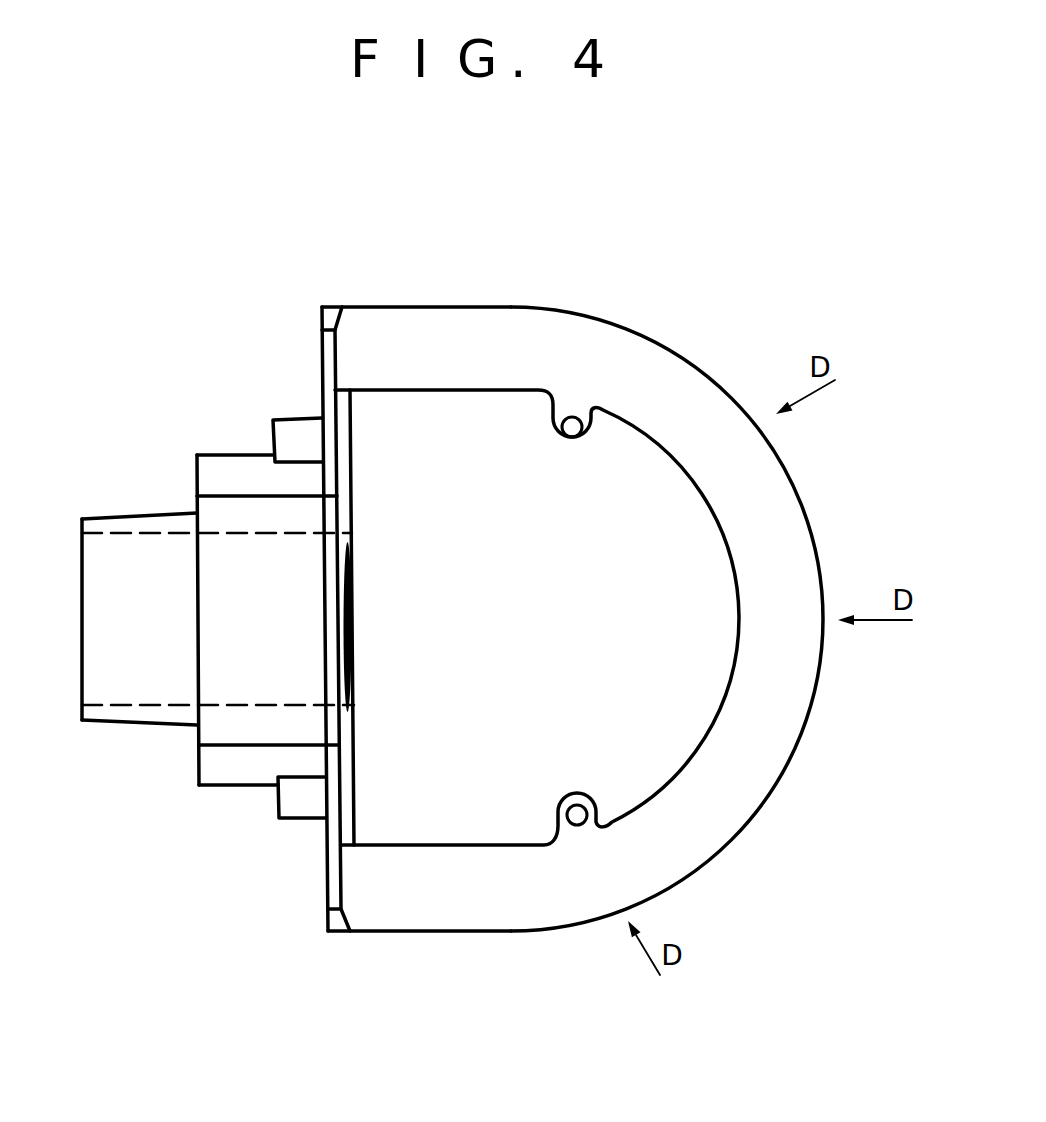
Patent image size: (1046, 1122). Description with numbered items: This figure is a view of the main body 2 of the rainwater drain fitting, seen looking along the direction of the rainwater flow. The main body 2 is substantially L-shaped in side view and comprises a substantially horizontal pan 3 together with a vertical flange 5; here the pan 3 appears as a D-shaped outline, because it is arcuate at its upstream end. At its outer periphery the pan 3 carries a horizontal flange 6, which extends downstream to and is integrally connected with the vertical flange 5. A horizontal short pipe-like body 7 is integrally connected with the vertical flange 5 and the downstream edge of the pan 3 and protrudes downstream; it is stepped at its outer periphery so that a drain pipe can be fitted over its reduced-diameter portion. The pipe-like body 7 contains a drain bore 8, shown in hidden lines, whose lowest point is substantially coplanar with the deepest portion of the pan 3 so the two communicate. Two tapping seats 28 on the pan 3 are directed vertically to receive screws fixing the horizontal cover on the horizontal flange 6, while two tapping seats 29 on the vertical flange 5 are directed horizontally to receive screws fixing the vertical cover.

The main body 2 is at (811, 800).
The pan 3 is at (698, 542).
The vertical flange 5 is at (332, 618).
The horizontal flange 6 is at (780, 680).
The pipe-like body 7 is at (193, 807).
The drain bore 8 is at (127, 672).
The tapping seats 28 is at (572, 437).
The tapping seats 29 is at (289, 433).